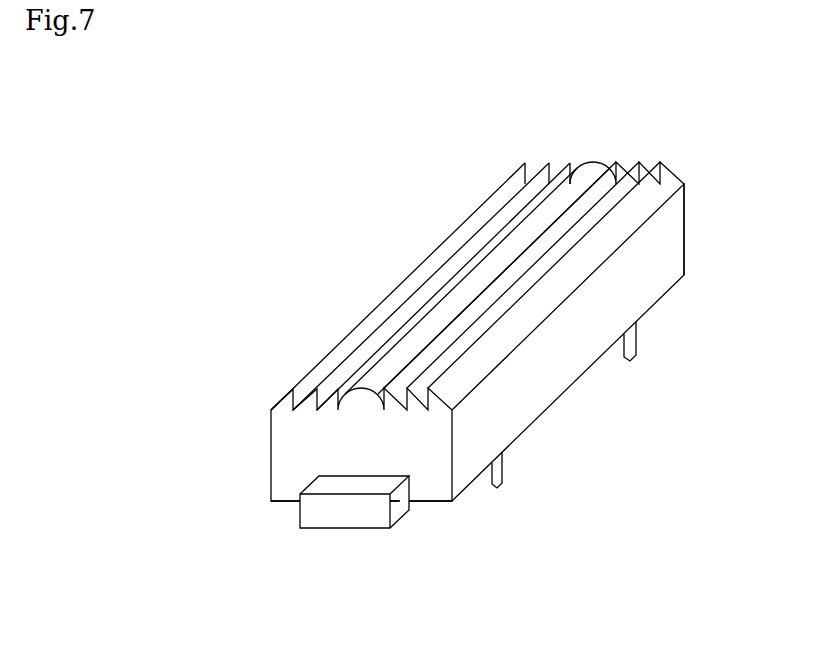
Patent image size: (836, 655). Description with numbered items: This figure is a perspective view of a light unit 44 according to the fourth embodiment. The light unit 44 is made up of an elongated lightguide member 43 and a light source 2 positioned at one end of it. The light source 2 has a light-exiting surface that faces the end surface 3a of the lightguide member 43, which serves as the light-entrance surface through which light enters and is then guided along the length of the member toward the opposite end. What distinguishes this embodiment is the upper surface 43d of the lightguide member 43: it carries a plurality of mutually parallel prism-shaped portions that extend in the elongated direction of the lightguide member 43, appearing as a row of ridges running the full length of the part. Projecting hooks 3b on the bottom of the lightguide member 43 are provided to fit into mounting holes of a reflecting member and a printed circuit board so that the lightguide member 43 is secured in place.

The lightguide member 43 is at (353, 221).
The upper surface 43d is at (422, 249).
The light unit 44 is at (702, 165).
The end surface 3a is at (433, 475).
The projecting hooks 3b is at (498, 490).
The light source 2 is at (342, 513).